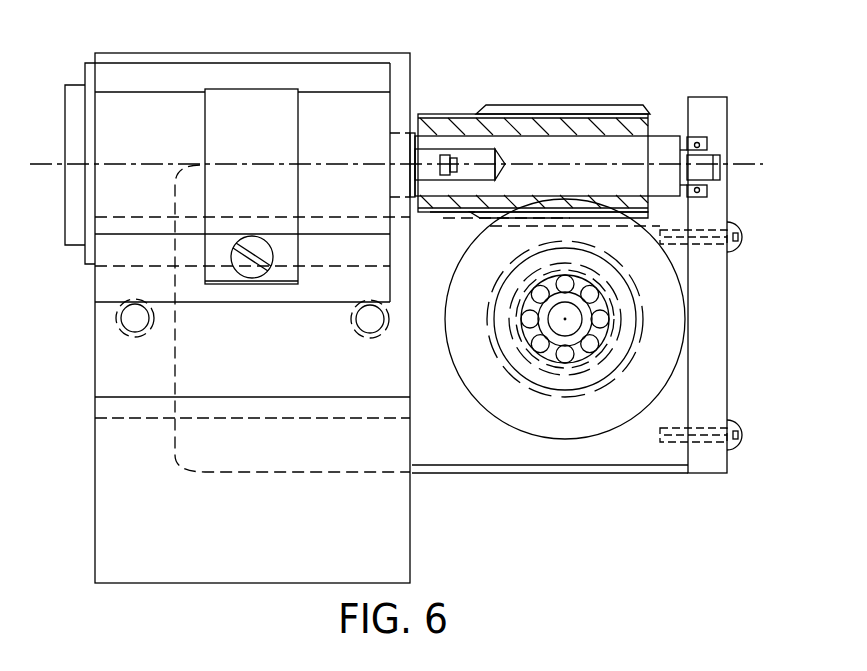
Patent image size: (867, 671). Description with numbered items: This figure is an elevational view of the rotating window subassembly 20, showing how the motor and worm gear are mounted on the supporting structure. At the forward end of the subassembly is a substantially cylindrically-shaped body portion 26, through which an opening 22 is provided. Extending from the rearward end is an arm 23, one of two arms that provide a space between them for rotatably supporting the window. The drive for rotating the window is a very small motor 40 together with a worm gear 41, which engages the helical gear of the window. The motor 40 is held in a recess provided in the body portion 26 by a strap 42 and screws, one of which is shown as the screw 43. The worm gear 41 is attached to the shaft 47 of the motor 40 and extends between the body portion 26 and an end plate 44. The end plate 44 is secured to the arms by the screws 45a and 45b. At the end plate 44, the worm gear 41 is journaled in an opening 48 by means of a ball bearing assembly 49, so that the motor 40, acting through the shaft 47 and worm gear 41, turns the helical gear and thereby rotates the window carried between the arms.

The rotating window subassembly 20 is at (611, 90).
The opening 22 is at (135, 266).
The arm 23 is at (677, 263).
The body portion 26 is at (118, 353).
The motor 40 is at (378, 107).
The worm gear 41 is at (625, 108).
The strap 42 is at (272, 107).
The screw 43 is at (245, 278).
The end plate 44 is at (720, 290).
The screw 45a is at (736, 232).
The screw 45b is at (740, 430).
The shaft 47 is at (428, 155).
The opening 48 is at (715, 148).
The ball bearing assembly 49 is at (697, 140).